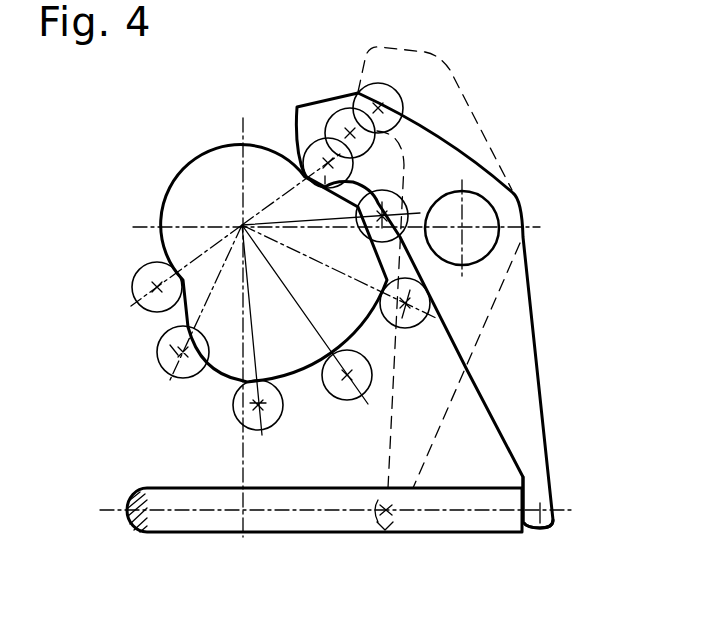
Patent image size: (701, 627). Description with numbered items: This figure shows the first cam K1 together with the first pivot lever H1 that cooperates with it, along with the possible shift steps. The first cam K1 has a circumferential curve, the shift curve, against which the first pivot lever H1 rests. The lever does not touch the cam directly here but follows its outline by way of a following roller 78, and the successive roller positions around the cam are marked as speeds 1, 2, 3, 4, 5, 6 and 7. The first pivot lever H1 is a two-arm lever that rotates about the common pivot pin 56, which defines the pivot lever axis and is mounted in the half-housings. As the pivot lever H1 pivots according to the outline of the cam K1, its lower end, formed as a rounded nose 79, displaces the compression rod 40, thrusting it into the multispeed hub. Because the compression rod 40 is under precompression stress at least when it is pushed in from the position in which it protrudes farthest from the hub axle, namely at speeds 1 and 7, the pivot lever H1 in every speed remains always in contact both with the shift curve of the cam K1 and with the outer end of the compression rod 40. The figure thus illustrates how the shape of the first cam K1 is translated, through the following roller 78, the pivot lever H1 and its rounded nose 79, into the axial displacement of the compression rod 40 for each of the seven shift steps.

The first cam K1 is at (293, 377).
The first pivot lever H1 is at (537, 332).
The pivot pin 56 is at (478, 213).
The compression rod 40 is at (318, 518).
The rounded nose 79 is at (527, 525).
The following roller 78 is at (297, 108).
The speed 1 is at (328, 165).
The speed 2 is at (382, 216).
The speed 3 is at (405, 303).
The speed 4 is at (347, 377).
The speed 5 is at (258, 405).
The speed 6 is at (183, 352).
The speed 7 is at (157, 287).